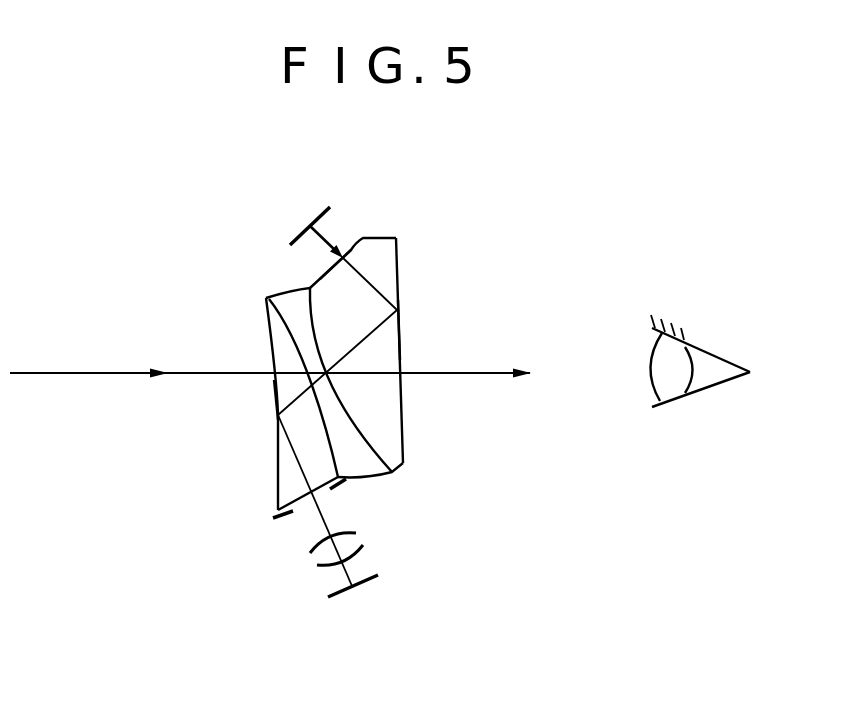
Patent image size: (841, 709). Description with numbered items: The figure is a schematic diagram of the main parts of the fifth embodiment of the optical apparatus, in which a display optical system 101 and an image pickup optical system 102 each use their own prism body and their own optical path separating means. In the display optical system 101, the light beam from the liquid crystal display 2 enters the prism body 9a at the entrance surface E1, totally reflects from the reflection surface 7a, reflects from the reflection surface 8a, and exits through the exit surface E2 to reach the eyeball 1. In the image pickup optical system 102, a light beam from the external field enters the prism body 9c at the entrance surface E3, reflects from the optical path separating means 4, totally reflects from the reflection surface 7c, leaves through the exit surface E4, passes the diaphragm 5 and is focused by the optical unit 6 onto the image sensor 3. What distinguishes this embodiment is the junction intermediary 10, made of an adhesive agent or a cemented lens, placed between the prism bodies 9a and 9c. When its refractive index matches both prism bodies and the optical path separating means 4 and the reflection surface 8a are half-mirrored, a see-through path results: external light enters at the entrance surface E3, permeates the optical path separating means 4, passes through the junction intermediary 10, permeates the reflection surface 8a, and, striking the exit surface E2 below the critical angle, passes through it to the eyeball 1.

The eyeball 1 is at (698, 396).
The liquid crystal display (LCD) 2 is at (318, 208).
The image sensor (CCD) 3 is at (372, 584).
The optical path separating means 4 is at (270, 323).
The diaphragm 5 is at (278, 521).
The optical unit 6 is at (358, 539).
The reflection surface 7a is at (398, 272).
The reflection surface 7c is at (277, 440).
The reflection surface 8a is at (345, 413).
The prism body 9a is at (393, 441).
The prism body 9c is at (278, 482).
The junction intermediary 10 is at (293, 300).
The display optical system 101 is at (415, 295).
The image pickup optical system 102 is at (220, 412).
The entrance surface E1 is at (350, 248).
The exit surface E2 is at (400, 347).
The entrance surface E3 is at (273, 391).
The exit surface E4 is at (303, 505).